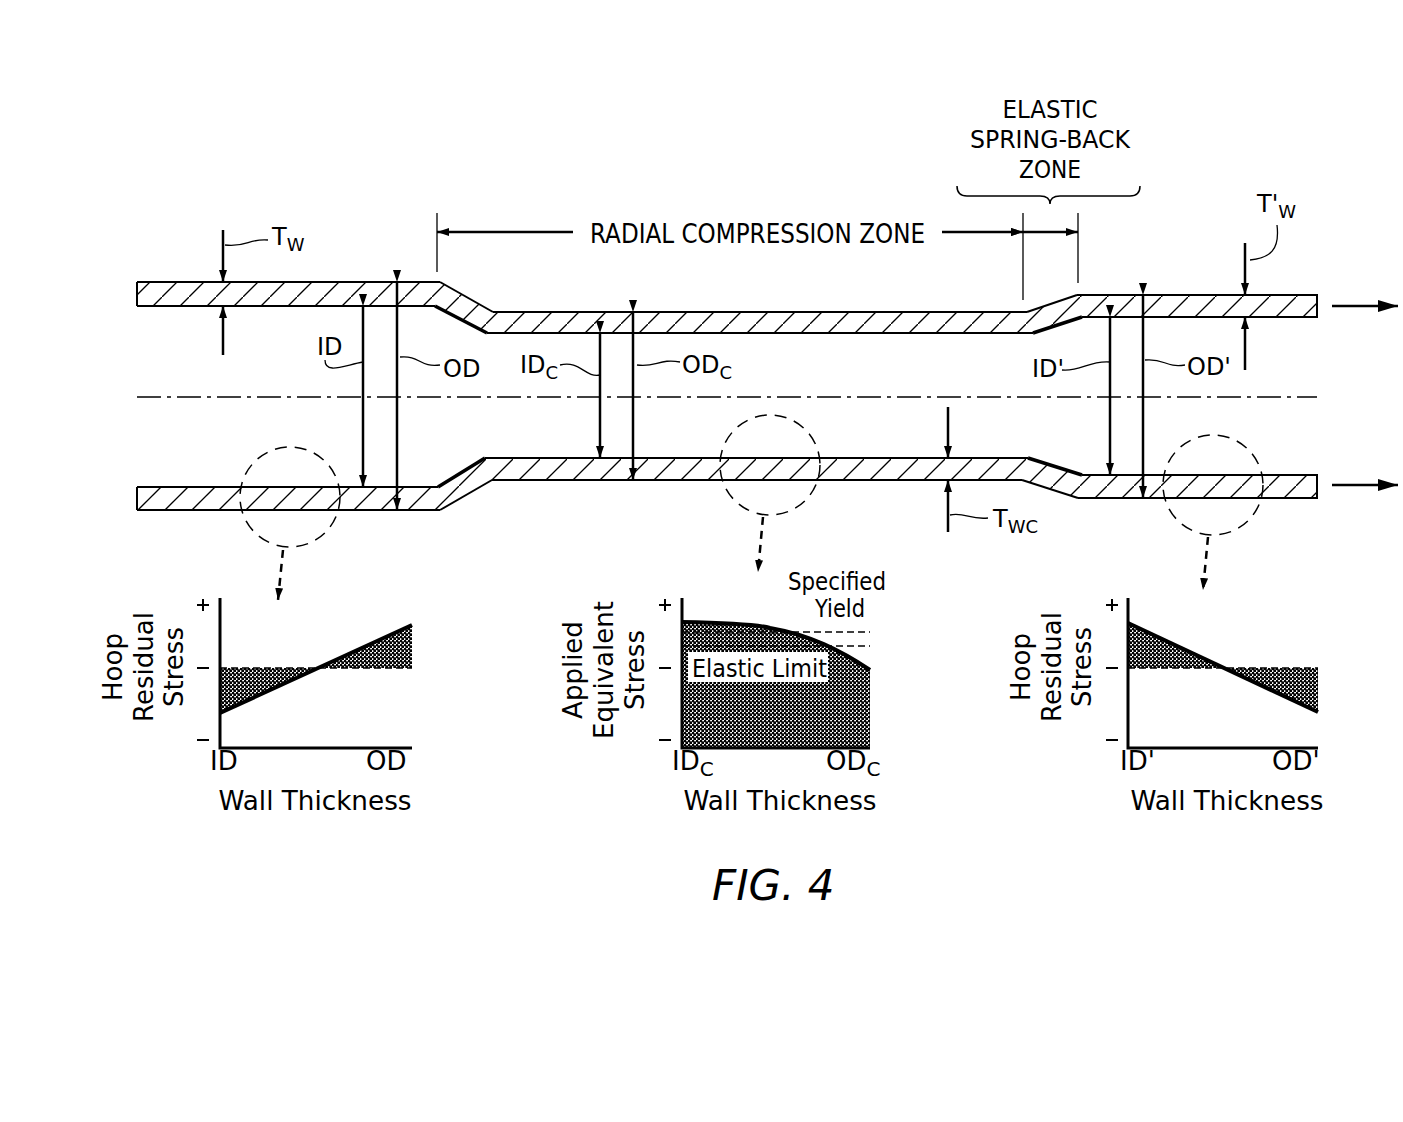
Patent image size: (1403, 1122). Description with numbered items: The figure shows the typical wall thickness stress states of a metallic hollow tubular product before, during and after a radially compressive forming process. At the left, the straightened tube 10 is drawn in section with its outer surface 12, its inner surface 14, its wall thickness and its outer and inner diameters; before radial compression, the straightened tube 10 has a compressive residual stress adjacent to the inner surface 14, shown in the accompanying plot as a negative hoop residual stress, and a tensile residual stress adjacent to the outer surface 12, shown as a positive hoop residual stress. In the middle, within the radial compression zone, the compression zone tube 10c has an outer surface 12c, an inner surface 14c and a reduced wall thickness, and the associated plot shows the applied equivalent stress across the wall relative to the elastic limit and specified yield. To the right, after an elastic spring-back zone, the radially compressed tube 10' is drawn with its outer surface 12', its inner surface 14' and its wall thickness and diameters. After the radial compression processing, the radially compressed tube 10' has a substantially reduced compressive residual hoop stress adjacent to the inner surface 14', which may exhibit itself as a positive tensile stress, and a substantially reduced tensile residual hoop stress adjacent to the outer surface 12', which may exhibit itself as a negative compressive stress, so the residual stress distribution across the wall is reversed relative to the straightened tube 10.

The straightened tube 10 is at (288, 252).
The outer surface 12 is at (288, 537).
The inner surface 14 is at (288, 462).
The compression zone tube 10c is at (690, 318).
The outer surface 12c is at (885, 310).
The inner surface 14c is at (793, 345).
The radially compressed tube 10' is at (1222, 281).
The outer surface 12' is at (1197, 259).
The inner surface 14' is at (1214, 343).